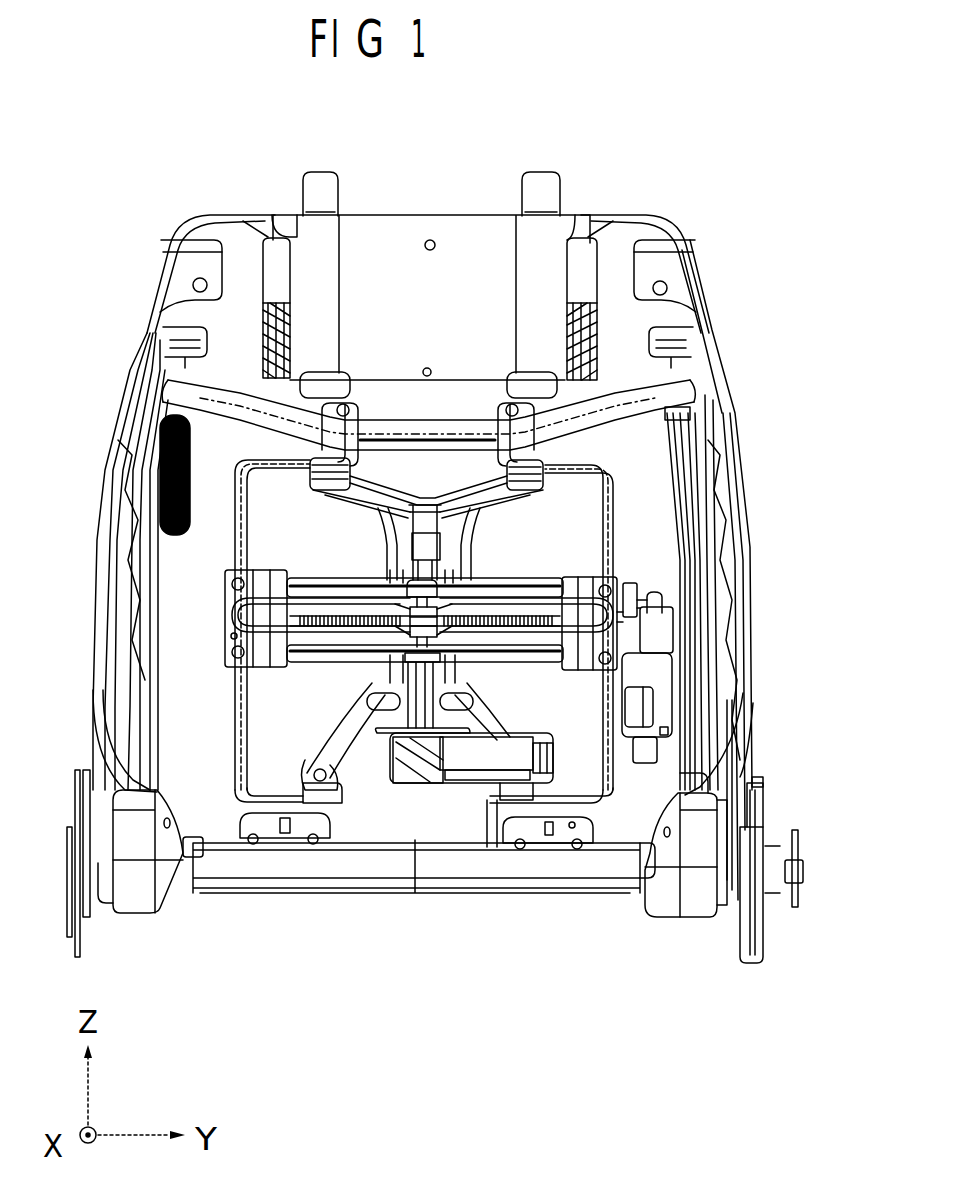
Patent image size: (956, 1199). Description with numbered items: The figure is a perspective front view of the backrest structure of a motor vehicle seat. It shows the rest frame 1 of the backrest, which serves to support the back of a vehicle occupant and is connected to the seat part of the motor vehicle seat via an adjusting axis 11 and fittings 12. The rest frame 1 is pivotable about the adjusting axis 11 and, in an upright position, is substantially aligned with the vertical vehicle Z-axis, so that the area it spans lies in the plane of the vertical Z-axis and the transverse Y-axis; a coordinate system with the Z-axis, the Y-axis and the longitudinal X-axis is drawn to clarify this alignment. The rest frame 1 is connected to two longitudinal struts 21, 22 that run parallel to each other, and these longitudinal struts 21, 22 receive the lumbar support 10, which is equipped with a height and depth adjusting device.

The rest frame 1 is at (717, 410).
The lumbar support 10 is at (212, 573).
The adjusting axis 11 is at (702, 840).
The fittings 12 is at (763, 830).
The longitudinal strut 21 is at (242, 527).
The longitudinal strut 22 is at (613, 507).